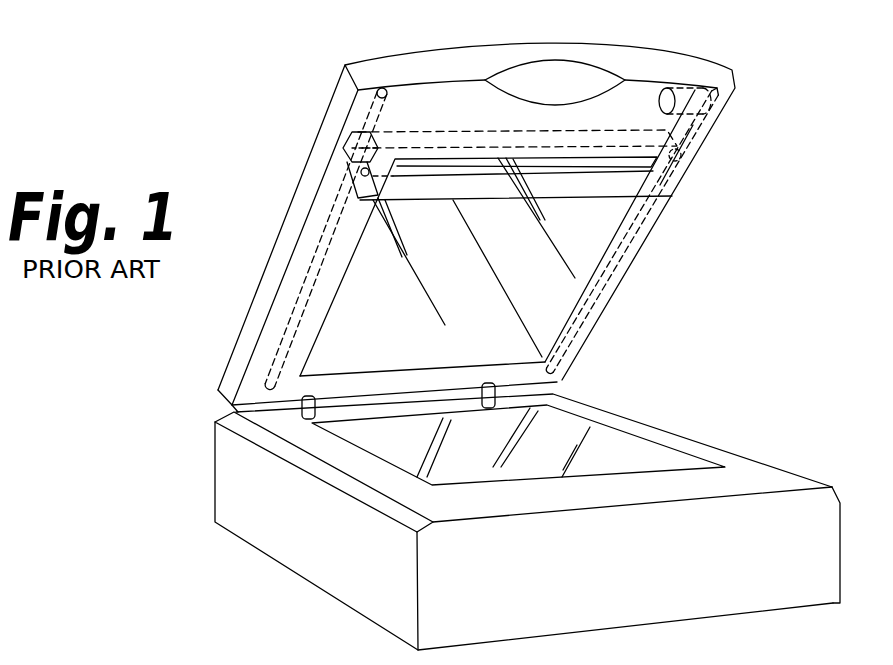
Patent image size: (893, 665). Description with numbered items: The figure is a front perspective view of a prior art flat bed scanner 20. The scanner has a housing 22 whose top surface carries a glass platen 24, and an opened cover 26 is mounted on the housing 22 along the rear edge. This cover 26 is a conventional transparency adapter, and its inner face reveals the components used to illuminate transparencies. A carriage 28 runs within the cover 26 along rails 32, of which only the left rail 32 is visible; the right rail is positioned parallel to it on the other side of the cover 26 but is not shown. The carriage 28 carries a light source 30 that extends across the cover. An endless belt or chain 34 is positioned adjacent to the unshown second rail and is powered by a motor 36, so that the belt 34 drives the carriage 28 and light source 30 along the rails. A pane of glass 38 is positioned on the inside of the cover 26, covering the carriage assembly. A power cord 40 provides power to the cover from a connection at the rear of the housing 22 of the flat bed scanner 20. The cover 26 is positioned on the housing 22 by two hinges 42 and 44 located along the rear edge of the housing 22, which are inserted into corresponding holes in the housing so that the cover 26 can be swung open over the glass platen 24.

The flat bed scanner 20 is at (183, 480).
The housing 22 is at (300, 534).
The glass platen 24 is at (620, 448).
The cover 26 is at (300, 186).
The carriage 28 is at (450, 142).
The light source 30 is at (622, 168).
The rail 32 is at (358, 115).
The endless belt 34 is at (694, 125).
The motor 36 is at (698, 84).
The glass 38 is at (550, 290).
The power cord 40 is at (238, 408).
The hinge 42 is at (312, 396).
The hinge 44 is at (486, 383).